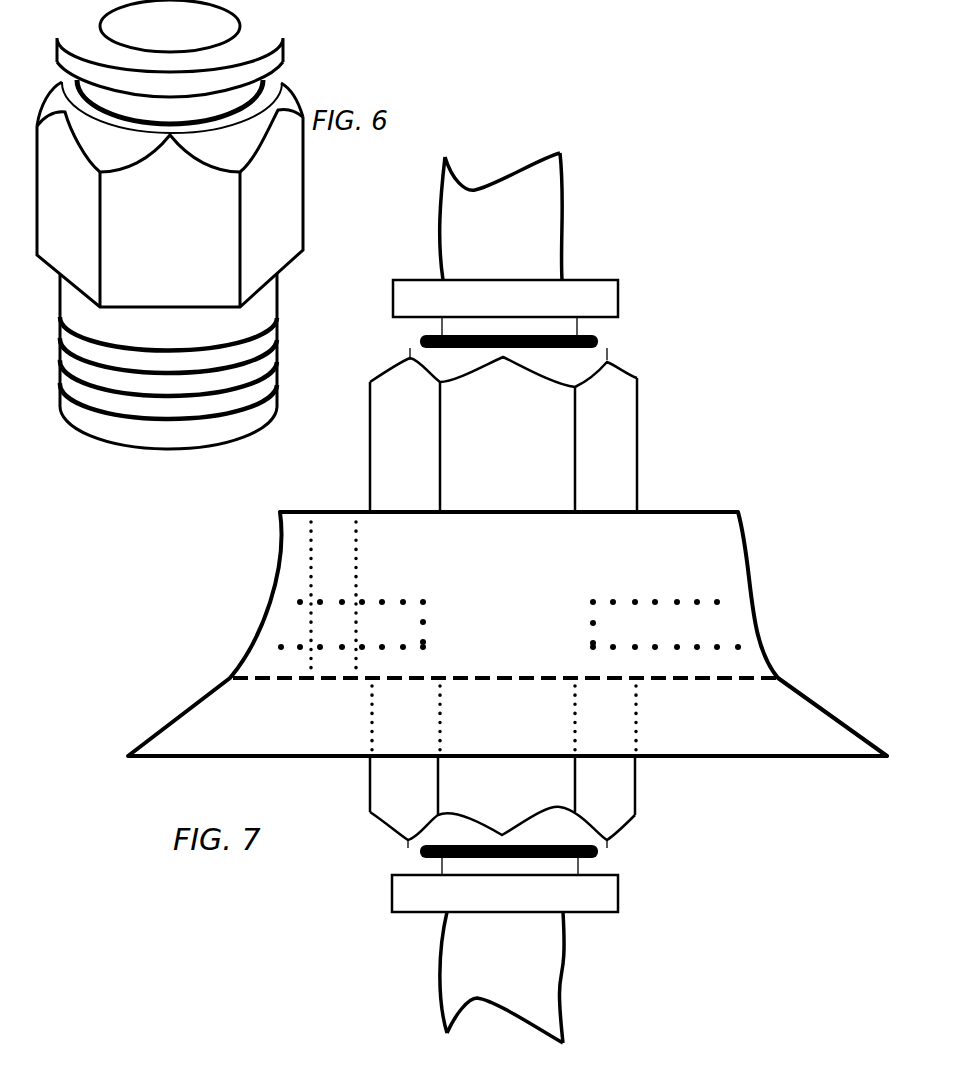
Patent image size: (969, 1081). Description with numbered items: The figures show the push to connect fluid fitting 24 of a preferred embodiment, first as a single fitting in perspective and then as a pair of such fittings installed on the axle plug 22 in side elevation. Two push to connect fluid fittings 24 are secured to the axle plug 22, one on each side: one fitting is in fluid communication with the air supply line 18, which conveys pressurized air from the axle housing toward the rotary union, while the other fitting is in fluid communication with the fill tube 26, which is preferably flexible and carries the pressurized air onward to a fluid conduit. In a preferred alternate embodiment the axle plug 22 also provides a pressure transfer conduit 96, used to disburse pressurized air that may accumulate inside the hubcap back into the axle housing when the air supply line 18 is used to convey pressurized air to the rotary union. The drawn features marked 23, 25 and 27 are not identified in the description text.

In FIG. 7, the air supply line 18 is at (558, 217).
In FIG. 7, the axle plug 22 is at (277, 607).
In FIG. 7, the central portion of flange 23 is at (535, 572).
In FIG. 6, the push to connect fluid fitting 24 is at (304, 78).
In FIG. 7, the push to connect fluid fitting 24 is at (628, 387).
In FIG. 7, the perforations 25 is at (440, 596).
In FIG. 7, the fill tube 26 is at (438, 980).
In FIG. 7, the perforations 27 is at (553, 657).
In FIG. 7, the pressure transfer conduit 96 is at (340, 503).